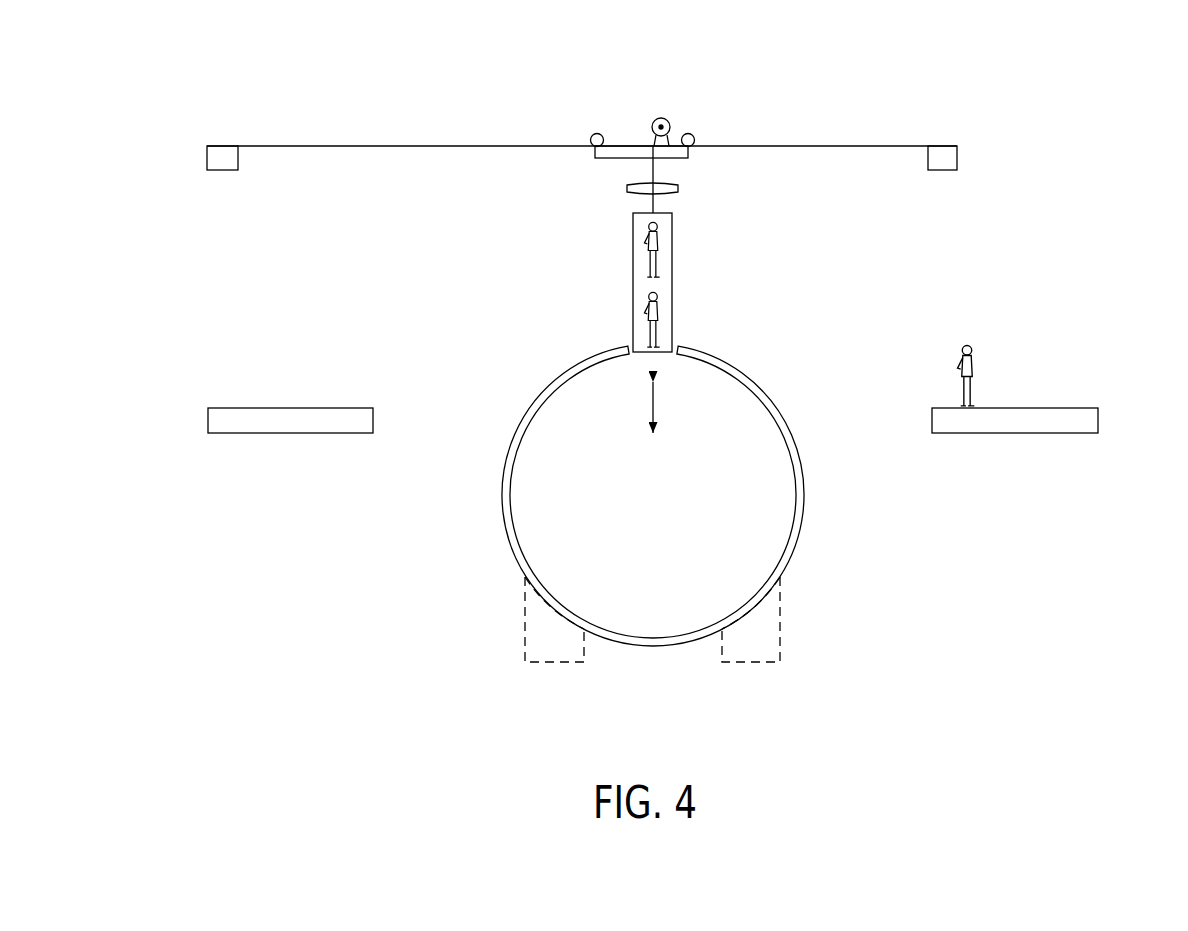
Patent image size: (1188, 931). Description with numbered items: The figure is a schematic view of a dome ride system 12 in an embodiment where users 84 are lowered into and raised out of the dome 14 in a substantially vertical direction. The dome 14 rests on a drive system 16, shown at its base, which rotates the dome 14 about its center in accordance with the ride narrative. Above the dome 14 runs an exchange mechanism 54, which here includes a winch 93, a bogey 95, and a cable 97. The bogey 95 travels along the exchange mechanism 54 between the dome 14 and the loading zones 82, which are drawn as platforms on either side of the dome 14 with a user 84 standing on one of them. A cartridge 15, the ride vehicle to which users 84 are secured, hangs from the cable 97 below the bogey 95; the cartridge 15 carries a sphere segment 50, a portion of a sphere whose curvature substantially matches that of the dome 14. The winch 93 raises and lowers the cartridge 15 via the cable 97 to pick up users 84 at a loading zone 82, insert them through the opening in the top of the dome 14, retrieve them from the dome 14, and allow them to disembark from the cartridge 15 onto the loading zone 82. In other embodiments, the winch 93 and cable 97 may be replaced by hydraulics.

The dome ride system 12 is at (1018, 90).
The dome 14 is at (802, 528).
The cartridge 15 is at (682, 242).
The drive system 16 is at (525, 620).
The sphere segment 50 is at (678, 184).
The exchange mechanism 54 is at (780, 131).
The loading zone 82 is at (262, 393).
The user 84 is at (667, 299).
The winch 93 is at (668, 121).
The bogey 95 is at (588, 153).
The cable 97 is at (651, 168).